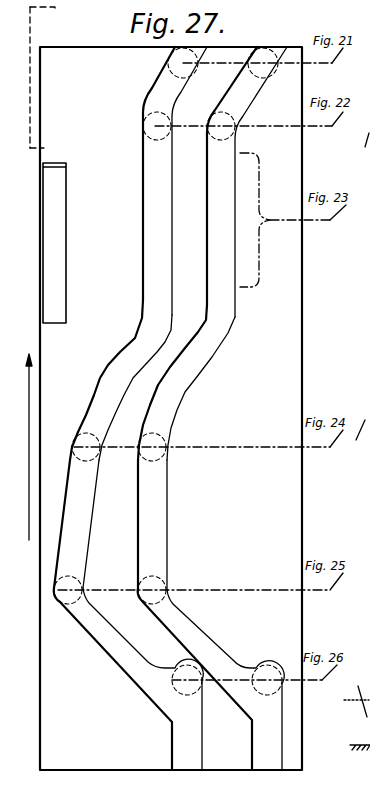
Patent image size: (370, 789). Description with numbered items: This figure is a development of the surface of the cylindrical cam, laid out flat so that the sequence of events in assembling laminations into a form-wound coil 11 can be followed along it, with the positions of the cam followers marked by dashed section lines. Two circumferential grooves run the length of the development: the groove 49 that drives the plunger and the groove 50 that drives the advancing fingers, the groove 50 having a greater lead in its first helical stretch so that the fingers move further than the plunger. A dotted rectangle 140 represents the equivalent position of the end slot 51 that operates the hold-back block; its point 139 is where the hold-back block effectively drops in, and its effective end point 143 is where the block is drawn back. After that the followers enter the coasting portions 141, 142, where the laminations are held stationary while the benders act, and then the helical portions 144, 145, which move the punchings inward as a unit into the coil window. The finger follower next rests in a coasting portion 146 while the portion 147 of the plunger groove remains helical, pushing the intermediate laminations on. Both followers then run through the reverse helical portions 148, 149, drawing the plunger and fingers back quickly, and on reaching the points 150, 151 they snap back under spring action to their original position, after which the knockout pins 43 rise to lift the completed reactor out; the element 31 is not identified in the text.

The point of the dotted rectangle 139 is at (48, 8).
The dotted rectangle 140 is at (30, 93).
The effective end point of the dotted rectangle 143 is at (50, 148).
The end slot 51 is at (64, 197).
The circumferential groove 49 is at (141, 199).
The coasting portion 141 is at (152, 217).
The coasting portion 142 is at (215, 223).
The circumferential groove 50 is at (211, 258).
The helical portion 144 is at (120, 363).
The helical portion 145 is at (170, 383).
The coasting portion 146 is at (153, 523).
The helical portion 147 is at (78, 538).
The reverse helical portion 148 is at (113, 646).
The reverse helical portion 149 is at (198, 640).
The cam-groove recess 150 is at (157, 697).
The cam-groove recess 151 is at (248, 672).
The adjacent member 31 is at (356, 695).
The knockout pins 43 is at (368, 735).
The form-wound coil 11 is at (304, 783).